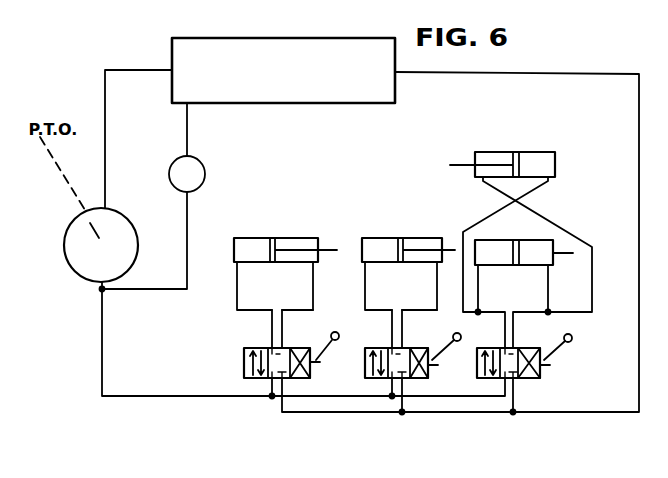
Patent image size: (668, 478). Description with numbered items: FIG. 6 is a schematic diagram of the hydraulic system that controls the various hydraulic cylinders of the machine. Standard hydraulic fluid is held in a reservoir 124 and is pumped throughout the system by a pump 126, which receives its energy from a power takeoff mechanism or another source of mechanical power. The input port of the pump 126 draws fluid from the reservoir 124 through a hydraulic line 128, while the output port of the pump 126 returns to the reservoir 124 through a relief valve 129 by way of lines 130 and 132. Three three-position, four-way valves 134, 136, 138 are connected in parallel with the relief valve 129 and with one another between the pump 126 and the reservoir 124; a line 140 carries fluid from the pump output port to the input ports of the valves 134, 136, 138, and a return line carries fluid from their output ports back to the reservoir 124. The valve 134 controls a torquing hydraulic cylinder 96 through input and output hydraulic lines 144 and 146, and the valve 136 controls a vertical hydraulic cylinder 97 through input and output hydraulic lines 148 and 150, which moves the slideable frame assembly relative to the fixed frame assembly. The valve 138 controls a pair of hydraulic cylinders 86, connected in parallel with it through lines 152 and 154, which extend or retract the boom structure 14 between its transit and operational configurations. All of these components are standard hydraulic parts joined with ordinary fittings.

The boom structure 14 is at (639, 350).
The hydraulic cylinders 86 is at (526, 152).
The torquing hydraulic cylinder 96 is at (275, 237).
The vertical hydraulic cylinder 97 is at (391, 237).
The reservoir 124 is at (369, 100).
The pump 126 is at (92, 276).
The hydraulic line 128 is at (107, 107).
The relief valve 129 is at (194, 168).
The line 130 is at (186, 228).
The line 132 is at (190, 121).
The three-position, four-way valve 134 is at (243, 360).
The three-position, four-way valve 136 is at (365, 363).
The three-position, four-way valve 138 is at (477, 364).
The line 140 is at (102, 370).
The input hydraulic line 144 is at (236, 295).
The output hydraulic line 146 is at (312, 289).
The input hydraulic line 148 is at (365, 293).
The output hydraulic line 150 is at (436, 290).
The line 152 is at (491, 214).
The line 154 is at (566, 231).